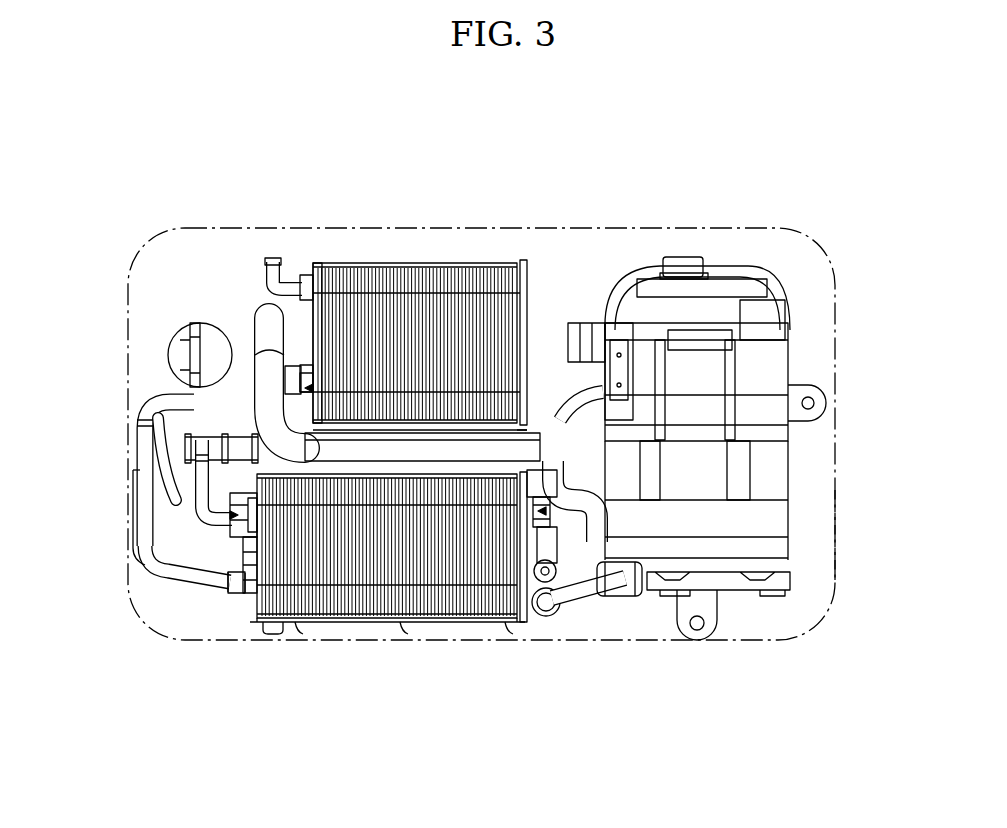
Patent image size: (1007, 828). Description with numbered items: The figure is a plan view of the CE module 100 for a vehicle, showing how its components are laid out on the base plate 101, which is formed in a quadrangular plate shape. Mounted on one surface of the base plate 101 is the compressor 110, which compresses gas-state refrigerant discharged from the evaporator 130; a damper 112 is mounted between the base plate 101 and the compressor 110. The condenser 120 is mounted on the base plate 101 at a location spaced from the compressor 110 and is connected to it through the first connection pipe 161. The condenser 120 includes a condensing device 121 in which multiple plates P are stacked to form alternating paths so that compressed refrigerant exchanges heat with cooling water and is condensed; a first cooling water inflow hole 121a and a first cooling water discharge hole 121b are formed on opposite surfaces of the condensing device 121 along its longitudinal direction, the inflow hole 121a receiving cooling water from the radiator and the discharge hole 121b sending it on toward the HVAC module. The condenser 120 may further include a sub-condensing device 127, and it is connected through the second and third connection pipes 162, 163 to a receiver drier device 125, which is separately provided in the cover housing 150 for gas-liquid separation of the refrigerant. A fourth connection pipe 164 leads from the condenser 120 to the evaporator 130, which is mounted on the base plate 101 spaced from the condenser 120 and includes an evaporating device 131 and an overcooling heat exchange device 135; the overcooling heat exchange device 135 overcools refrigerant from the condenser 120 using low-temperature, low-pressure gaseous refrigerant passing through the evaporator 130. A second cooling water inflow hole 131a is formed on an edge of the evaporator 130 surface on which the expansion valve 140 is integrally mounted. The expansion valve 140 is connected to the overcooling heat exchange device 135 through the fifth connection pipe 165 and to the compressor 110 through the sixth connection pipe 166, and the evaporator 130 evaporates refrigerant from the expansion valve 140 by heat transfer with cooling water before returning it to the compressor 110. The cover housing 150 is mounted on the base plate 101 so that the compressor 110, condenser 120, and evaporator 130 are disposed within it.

The CE module 100 is at (517, 121).
The base plate 101 is at (812, 527).
The compressor 110 is at (742, 483).
The damper 112 is at (697, 642).
The condenser 120 is at (278, 700).
The condensing device 121 is at (403, 624).
The first cooling water inflow hole 121a is at (272, 578).
The first cooling water discharge hole 121b is at (530, 612).
The receiver drier device 125 is at (178, 335).
The sub-condensing device 127 is at (274, 626).
The evaporator 130 is at (445, 182).
The evaporating device 131 is at (435, 262).
The second cooling water inflow hole 131a is at (292, 372).
The overcooling heat exchange device 135 is at (322, 262).
The expansion valve 140 is at (152, 396).
The cover housing 150 is at (812, 245).
The first connection pipe 161 is at (578, 598).
The second connection pipe 162 is at (152, 462).
The third connection pipe 163 is at (143, 499).
The fourth connection pipe 164 is at (200, 512).
The fifth connection pipe 165 is at (272, 260).
The sixth connection pipe 166 is at (557, 440).
The plates P is at (480, 340).